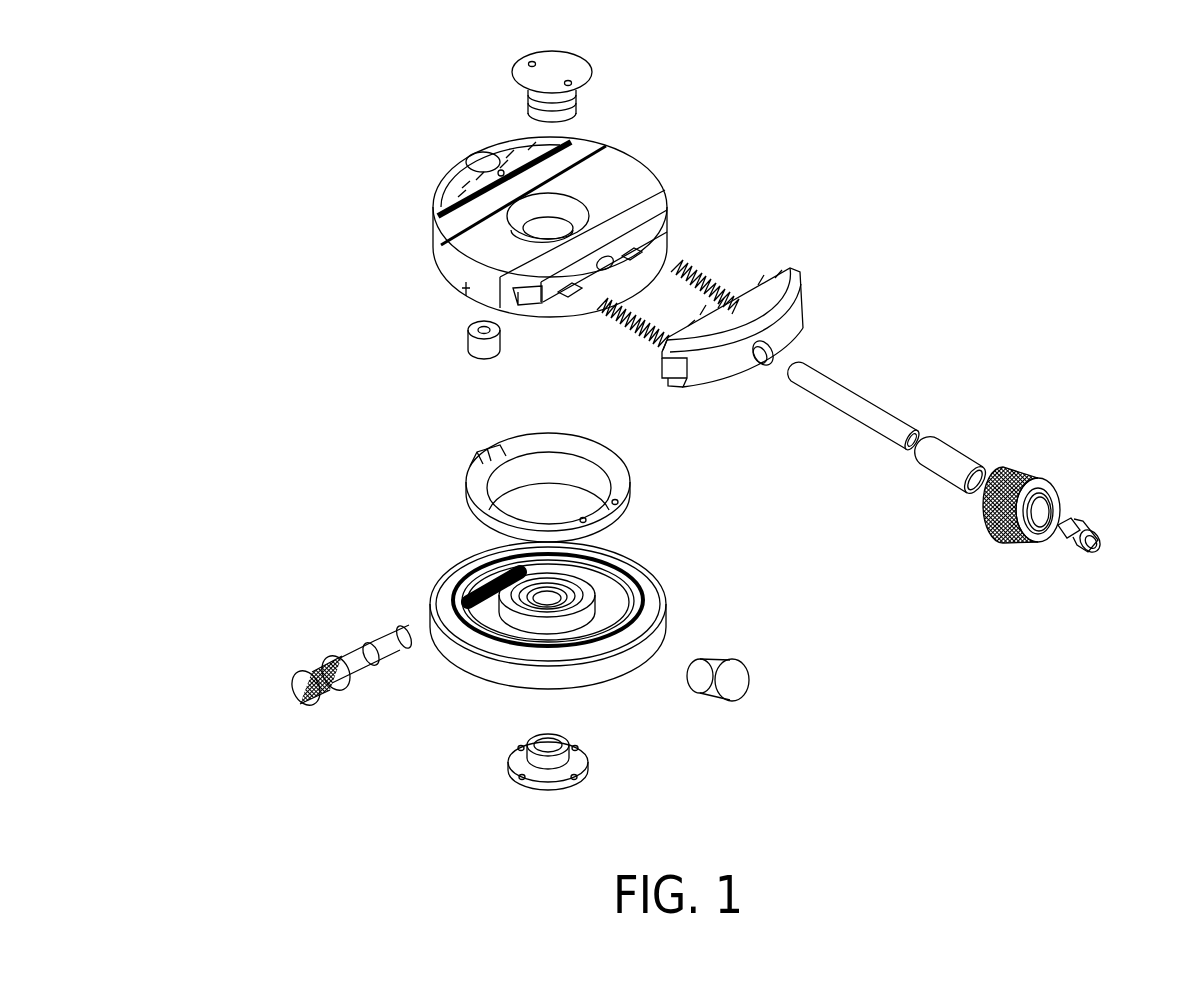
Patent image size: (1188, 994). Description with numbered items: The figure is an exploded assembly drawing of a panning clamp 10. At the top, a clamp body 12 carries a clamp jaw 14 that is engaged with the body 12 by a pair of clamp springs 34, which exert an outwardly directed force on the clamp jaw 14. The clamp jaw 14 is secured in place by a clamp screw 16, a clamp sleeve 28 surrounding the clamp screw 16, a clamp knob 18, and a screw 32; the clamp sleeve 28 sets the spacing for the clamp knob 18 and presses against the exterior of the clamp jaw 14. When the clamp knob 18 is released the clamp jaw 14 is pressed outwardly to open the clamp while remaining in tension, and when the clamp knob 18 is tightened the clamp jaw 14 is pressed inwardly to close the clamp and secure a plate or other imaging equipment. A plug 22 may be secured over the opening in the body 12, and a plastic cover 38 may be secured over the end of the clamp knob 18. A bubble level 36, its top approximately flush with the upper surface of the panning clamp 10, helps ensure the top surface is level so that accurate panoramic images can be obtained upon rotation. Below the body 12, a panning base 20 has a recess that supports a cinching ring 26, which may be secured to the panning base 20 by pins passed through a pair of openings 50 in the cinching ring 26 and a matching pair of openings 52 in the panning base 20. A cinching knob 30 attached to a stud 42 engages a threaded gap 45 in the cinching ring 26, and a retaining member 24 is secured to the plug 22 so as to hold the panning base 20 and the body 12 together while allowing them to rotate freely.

The panning clamp 10 is at (248, 580).
The clamp body 12 is at (624, 180).
The clamp jaw 14 is at (796, 322).
The clamp screw 16 is at (840, 392).
The clamp knob 18 is at (1037, 471).
The panning base 20 is at (573, 612).
The plug 22 is at (588, 79).
The retaining member 24 is at (580, 760).
The cinching ring 26 is at (582, 467).
The clamp sleeve 28 is at (942, 450).
The cinching knob 30 is at (362, 652).
The screw 32 is at (1090, 522).
The clamp springs 34 is at (710, 272).
The bubble level 36 is at (481, 346).
The plastic cover 38 is at (730, 694).
The stud 42 is at (478, 585).
The threaded gap 45 is at (495, 456).
The openings 50 is at (586, 522).
The openings 52 is at (610, 655).